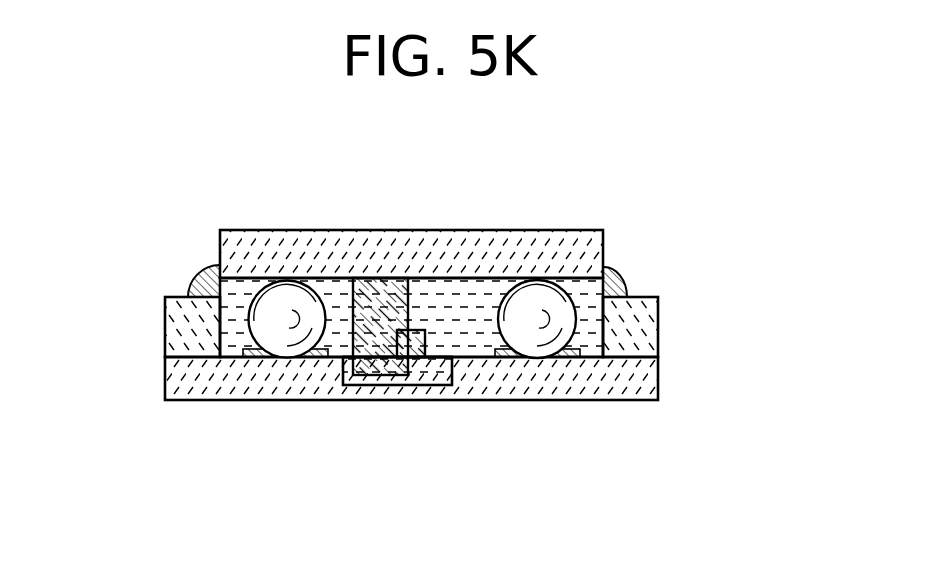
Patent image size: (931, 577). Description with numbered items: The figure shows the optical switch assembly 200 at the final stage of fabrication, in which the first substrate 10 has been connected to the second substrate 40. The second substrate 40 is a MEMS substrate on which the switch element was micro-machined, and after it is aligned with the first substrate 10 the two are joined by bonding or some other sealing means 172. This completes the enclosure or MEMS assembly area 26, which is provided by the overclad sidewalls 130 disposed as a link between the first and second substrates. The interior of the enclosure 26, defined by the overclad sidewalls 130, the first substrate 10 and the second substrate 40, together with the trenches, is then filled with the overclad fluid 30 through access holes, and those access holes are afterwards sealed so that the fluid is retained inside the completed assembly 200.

The optical device assembly 200 is at (118, 303).
The enclosure 26 is at (197, 276).
The second substrate 40 is at (462, 247).
The sealing means 172 is at (622, 281).
The overclad sidewall 130 is at (645, 327).
The overclad fluid 30 is at (470, 352).
The first substrate 10 is at (620, 392).